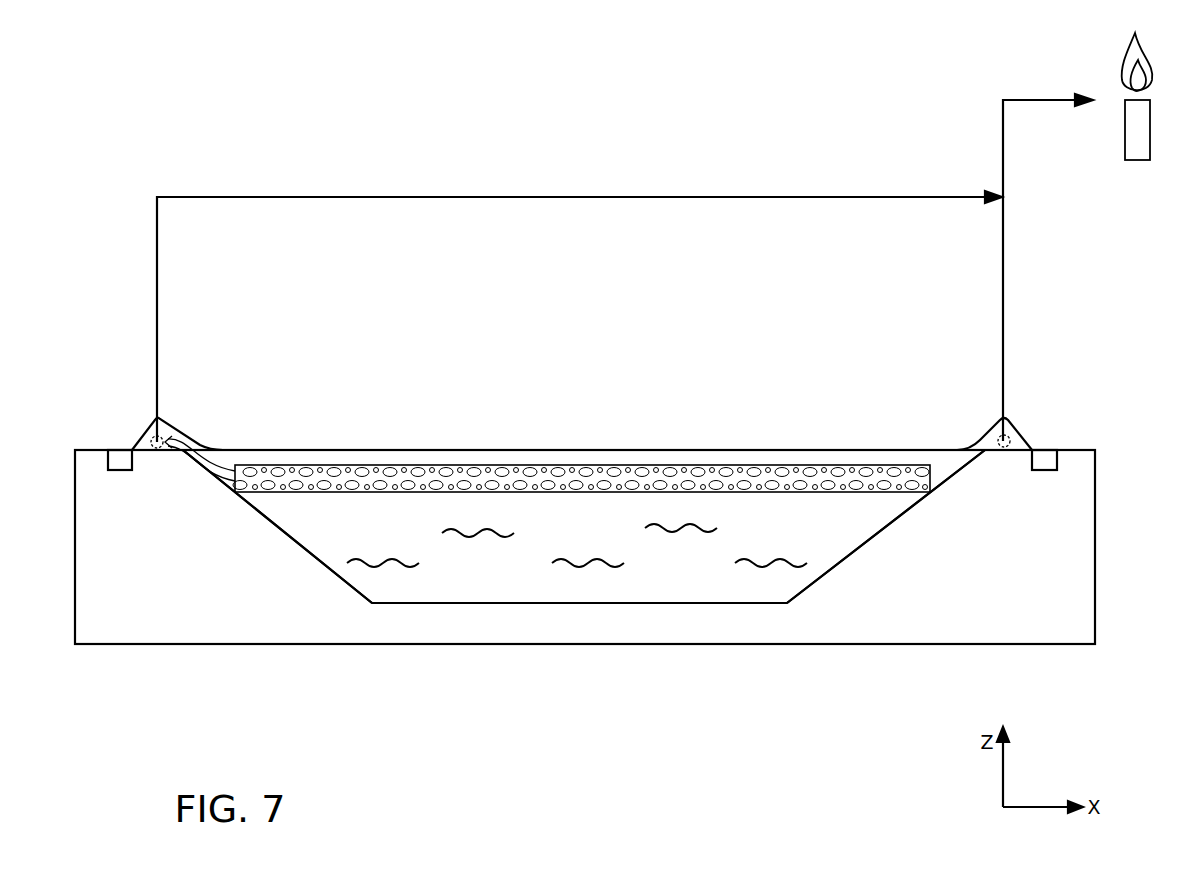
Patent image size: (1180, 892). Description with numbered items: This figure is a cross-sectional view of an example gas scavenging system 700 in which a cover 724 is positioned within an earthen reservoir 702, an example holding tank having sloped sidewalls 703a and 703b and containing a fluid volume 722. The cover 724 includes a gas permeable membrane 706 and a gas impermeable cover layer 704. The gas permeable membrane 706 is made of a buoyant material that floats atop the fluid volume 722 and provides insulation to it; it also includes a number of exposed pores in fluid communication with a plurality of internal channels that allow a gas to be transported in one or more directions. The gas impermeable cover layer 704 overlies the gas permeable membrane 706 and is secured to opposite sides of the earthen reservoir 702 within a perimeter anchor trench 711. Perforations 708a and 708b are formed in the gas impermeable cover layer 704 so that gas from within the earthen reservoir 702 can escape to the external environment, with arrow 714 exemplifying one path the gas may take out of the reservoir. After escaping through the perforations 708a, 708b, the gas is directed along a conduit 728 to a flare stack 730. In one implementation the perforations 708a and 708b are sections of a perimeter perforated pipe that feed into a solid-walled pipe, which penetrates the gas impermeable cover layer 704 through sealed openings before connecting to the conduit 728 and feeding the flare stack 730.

The gas scavenging system 700 is at (176, 160).
The earthen reservoir 702 is at (928, 470).
The sloped sidewall 703a is at (268, 519).
The sloped sidewall 703b is at (882, 526).
The gas impermeable cover layer 704 is at (736, 452).
The gas permeable membrane 706 is at (578, 470).
The perforation 708a is at (155, 433).
The perforation 708b is at (1007, 432).
The perimeter anchor trench 711 is at (122, 460).
The arrow 714 is at (208, 459).
The fluid volume 722 is at (665, 510).
The cover 724 is at (448, 405).
The conduit 728 is at (1002, 155).
The flare stack 730 is at (1123, 145).